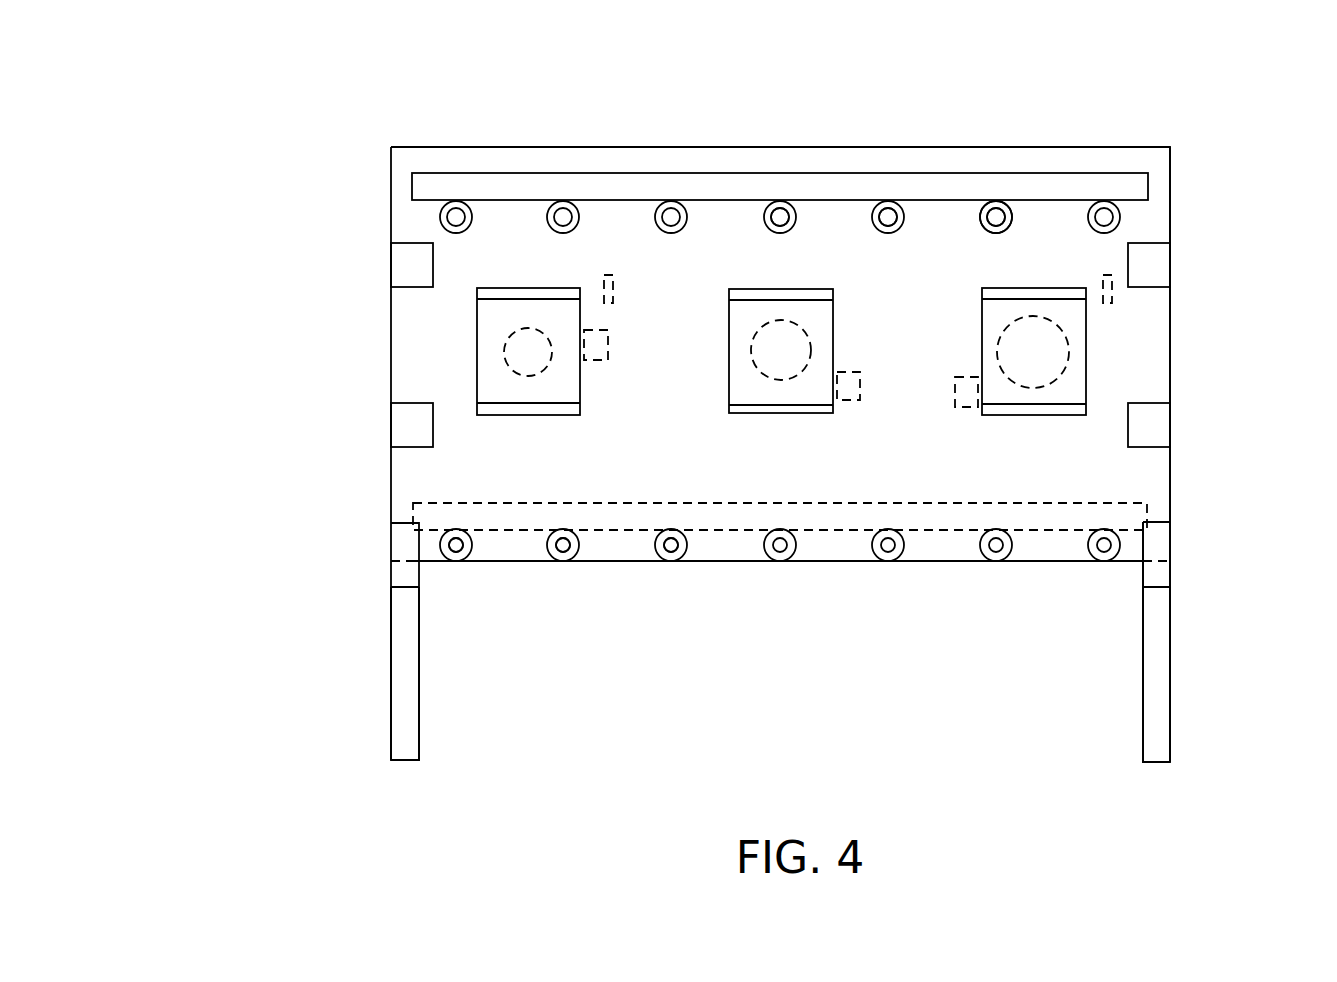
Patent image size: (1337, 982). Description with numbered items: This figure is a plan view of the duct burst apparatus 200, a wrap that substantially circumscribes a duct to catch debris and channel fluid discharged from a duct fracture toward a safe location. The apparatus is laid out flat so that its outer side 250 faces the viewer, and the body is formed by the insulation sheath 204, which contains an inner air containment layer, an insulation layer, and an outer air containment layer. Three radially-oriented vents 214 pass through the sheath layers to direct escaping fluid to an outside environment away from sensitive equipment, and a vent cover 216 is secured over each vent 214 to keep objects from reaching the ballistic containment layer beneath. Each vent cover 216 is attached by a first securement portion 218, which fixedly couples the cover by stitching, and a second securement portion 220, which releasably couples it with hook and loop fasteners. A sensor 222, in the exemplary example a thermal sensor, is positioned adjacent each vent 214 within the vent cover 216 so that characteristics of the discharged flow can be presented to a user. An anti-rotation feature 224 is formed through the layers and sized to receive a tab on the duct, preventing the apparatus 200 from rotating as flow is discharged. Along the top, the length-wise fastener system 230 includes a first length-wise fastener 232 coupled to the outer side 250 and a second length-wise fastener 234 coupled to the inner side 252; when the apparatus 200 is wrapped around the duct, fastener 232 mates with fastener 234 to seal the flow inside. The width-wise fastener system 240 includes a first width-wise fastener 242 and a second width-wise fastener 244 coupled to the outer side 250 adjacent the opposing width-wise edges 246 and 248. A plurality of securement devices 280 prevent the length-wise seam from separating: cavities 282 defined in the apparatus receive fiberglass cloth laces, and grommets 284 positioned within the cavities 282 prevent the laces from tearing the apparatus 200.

The duct burst apparatus 200 is at (368, 367).
The insulation sheath 204 is at (1150, 358).
The vent 214 is at (525, 375).
The vent cover 216 is at (468, 337).
The first securement portion 218 is at (530, 298).
The second securement portion 220 is at (760, 410).
The sensor 222 is at (596, 360).
The anti-rotation feature 224 is at (608, 273).
The length-wise fastener system 230 is at (755, 168).
The first length-wise fastener 232 is at (1145, 185).
The second length-wise fastener 234 is at (1142, 500).
The width-wise fastener system 240 is at (383, 614).
The first width-wise fastener 242 is at (413, 262).
The second width-wise fastener 244 is at (405, 710).
The width-wise edge 246 is at (390, 452).
The width-wise edge 248 is at (1170, 455).
The outer side 250 is at (412, 219).
The inner side 252 is at (383, 506).
The securement device 280 is at (1017, 196).
The cavity 282 is at (785, 208).
The grommet 284 is at (671, 561).